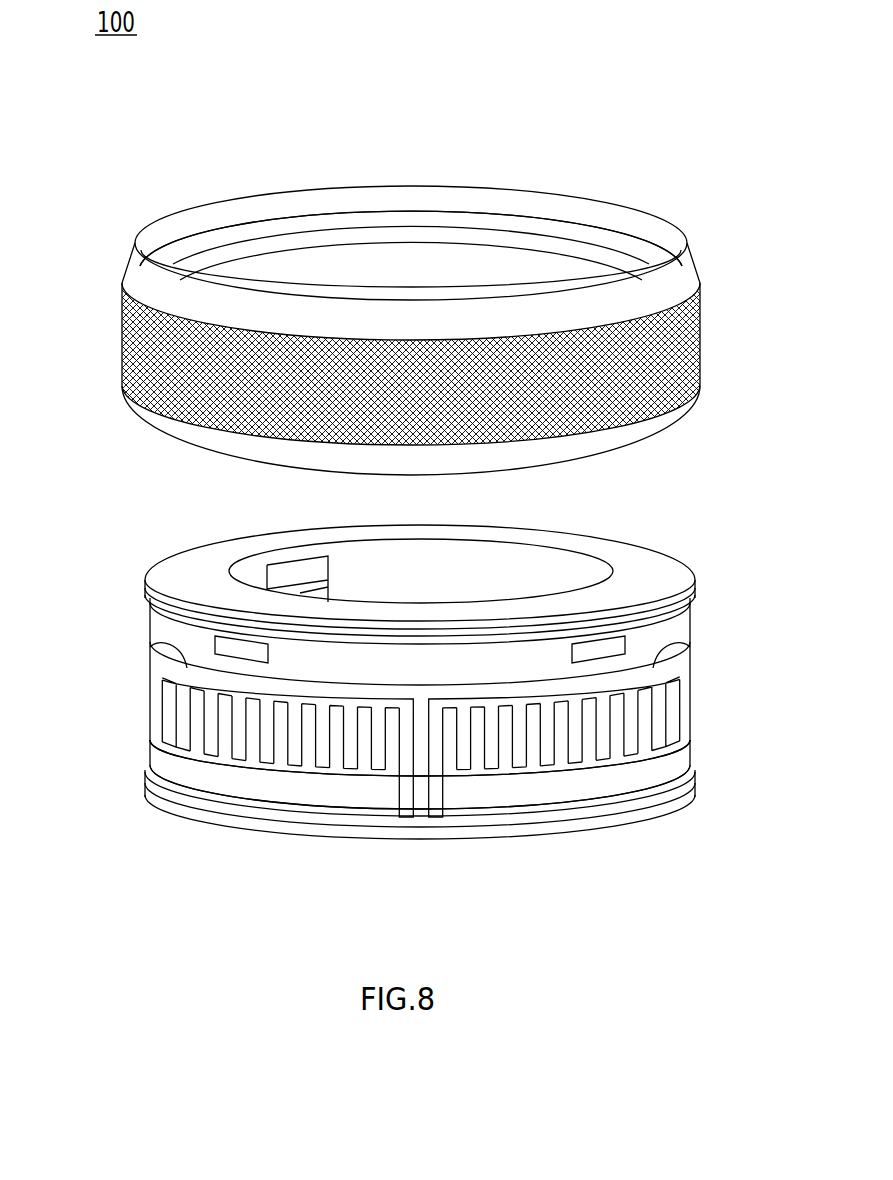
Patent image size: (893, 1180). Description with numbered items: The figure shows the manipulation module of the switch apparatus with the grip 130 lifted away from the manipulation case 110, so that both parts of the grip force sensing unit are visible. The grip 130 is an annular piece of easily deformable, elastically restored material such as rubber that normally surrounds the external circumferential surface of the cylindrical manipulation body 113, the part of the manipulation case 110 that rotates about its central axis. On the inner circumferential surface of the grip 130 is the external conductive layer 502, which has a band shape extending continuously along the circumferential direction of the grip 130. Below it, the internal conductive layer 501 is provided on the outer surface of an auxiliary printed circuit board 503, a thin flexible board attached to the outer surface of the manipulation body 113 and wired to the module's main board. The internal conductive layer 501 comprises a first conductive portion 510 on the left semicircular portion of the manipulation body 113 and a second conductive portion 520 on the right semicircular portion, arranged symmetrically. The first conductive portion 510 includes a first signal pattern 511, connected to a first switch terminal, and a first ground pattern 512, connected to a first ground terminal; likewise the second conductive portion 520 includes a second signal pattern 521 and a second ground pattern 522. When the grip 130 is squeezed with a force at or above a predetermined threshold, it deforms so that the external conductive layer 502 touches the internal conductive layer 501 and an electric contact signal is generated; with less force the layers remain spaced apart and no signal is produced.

The manipulation case 110 is at (655, 532).
The manipulation body 113 is at (538, 795).
The grip 130 is at (145, 347).
The internal conductive layer 501 is at (421, 755).
The external conductive layer 502 is at (487, 258).
The auxiliary printed circuit board 503 is at (305, 782).
The first conductive portion 510 is at (234, 754).
The first signal pattern 511 is at (210, 755).
The first ground pattern 512 is at (150, 646).
The second conductive portion 520 is at (608, 755).
The second signal pattern 521 is at (630, 755).
The second ground pattern 522 is at (690, 646).